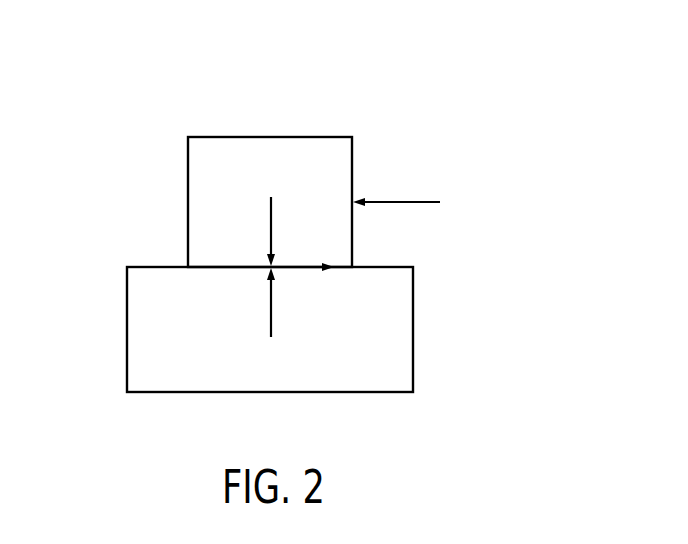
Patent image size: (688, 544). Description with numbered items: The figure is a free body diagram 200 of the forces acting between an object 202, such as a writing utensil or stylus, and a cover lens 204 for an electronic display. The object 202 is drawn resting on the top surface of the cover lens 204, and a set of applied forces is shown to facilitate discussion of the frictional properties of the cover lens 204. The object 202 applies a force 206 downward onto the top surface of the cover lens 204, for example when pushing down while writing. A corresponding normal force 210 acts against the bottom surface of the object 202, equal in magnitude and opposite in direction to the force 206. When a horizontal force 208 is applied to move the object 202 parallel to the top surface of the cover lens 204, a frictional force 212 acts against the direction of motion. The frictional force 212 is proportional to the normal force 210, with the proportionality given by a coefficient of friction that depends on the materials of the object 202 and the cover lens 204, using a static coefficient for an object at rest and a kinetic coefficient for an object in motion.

The free body diagram 200 is at (415, 58).
The object 202 is at (188, 201).
The cover lens 204 is at (127, 330).
The force 206 is at (271, 233).
The horizontal force 208 is at (398, 202).
The normal force 210 is at (271, 298).
The frictional force 212 is at (288, 264).